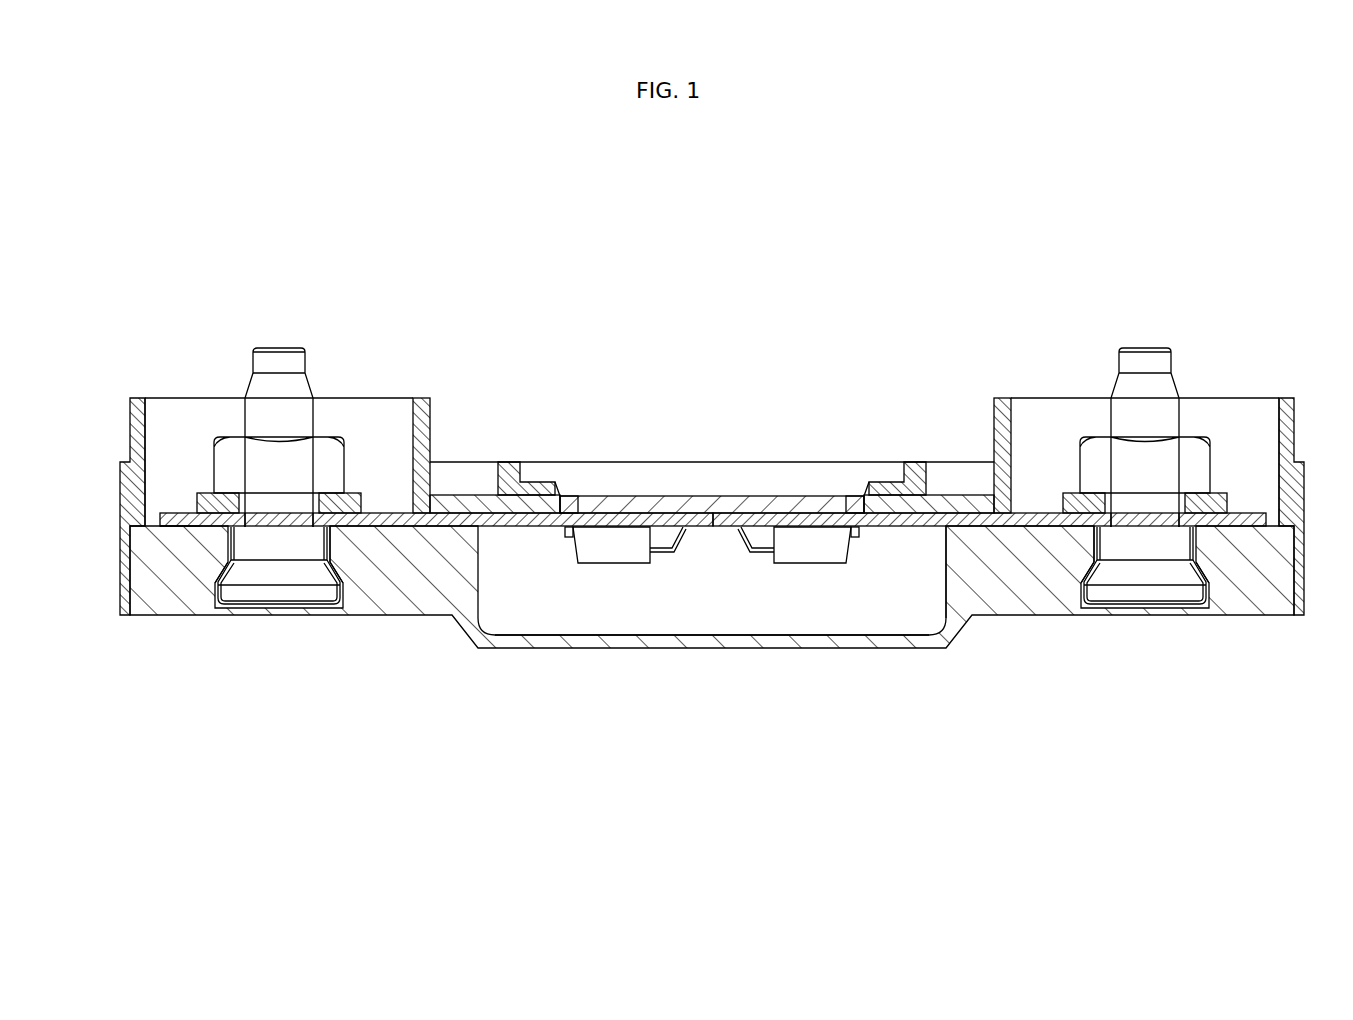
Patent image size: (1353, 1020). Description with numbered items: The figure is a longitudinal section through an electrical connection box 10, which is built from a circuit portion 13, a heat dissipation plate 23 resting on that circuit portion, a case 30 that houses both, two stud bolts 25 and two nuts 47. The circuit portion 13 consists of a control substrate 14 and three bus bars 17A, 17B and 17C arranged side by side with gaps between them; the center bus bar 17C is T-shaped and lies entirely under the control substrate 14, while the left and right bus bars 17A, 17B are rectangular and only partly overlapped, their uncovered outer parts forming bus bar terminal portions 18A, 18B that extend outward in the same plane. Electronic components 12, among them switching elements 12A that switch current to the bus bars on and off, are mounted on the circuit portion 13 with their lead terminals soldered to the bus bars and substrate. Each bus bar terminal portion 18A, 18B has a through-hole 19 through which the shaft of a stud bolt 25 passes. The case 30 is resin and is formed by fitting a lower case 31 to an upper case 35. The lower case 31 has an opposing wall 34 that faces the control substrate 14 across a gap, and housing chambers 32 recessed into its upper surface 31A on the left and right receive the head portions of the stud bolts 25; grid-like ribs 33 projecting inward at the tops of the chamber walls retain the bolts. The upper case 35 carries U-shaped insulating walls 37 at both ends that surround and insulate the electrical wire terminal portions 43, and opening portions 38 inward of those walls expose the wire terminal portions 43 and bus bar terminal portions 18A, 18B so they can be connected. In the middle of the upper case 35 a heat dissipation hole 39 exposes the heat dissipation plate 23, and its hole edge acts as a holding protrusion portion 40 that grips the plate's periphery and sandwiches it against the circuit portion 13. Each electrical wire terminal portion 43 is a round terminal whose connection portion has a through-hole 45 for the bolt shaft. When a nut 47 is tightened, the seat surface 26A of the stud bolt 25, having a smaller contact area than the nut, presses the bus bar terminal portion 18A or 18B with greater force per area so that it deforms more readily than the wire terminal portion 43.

The electrical connection box 10 is at (949, 203).
The electronic components 12 is at (732, 615).
The switching element 12A is at (820, 563).
The circuit portion 13 is at (717, 607).
The control substrate 14 is at (915, 530).
The bus bar 17A is at (437, 513).
The bus bar 17B is at (972, 497).
The bus bar 17C is at (683, 520).
The bus bar terminal portion 18A is at (378, 513).
The bus bar terminal portion 18B is at (1043, 513).
The through-hole 19 is at (258, 527).
The heat dissipation plate 23 is at (708, 497).
The stud bolt 25 is at (275, 582).
The seat surface 26A is at (272, 523).
The case 30 is at (1327, 714).
The lower case 31 is at (1255, 600).
The upper surface of heat sink body 31A is at (183, 513).
The housing chamber 32 is at (333, 562).
The rib 33 is at (333, 545).
The opposing wall 34 is at (768, 648).
The upper case 35 is at (1297, 500).
The insulating wall 37 is at (131, 417).
The opening portion 38 is at (150, 512).
The heat dissipation hole 39 is at (578, 492).
The holding protrusion portion 40 is at (570, 487).
The electrical wire terminal portion 43 is at (333, 497).
The through-hole 45 is at (244, 530).
The nut 47 is at (222, 440).